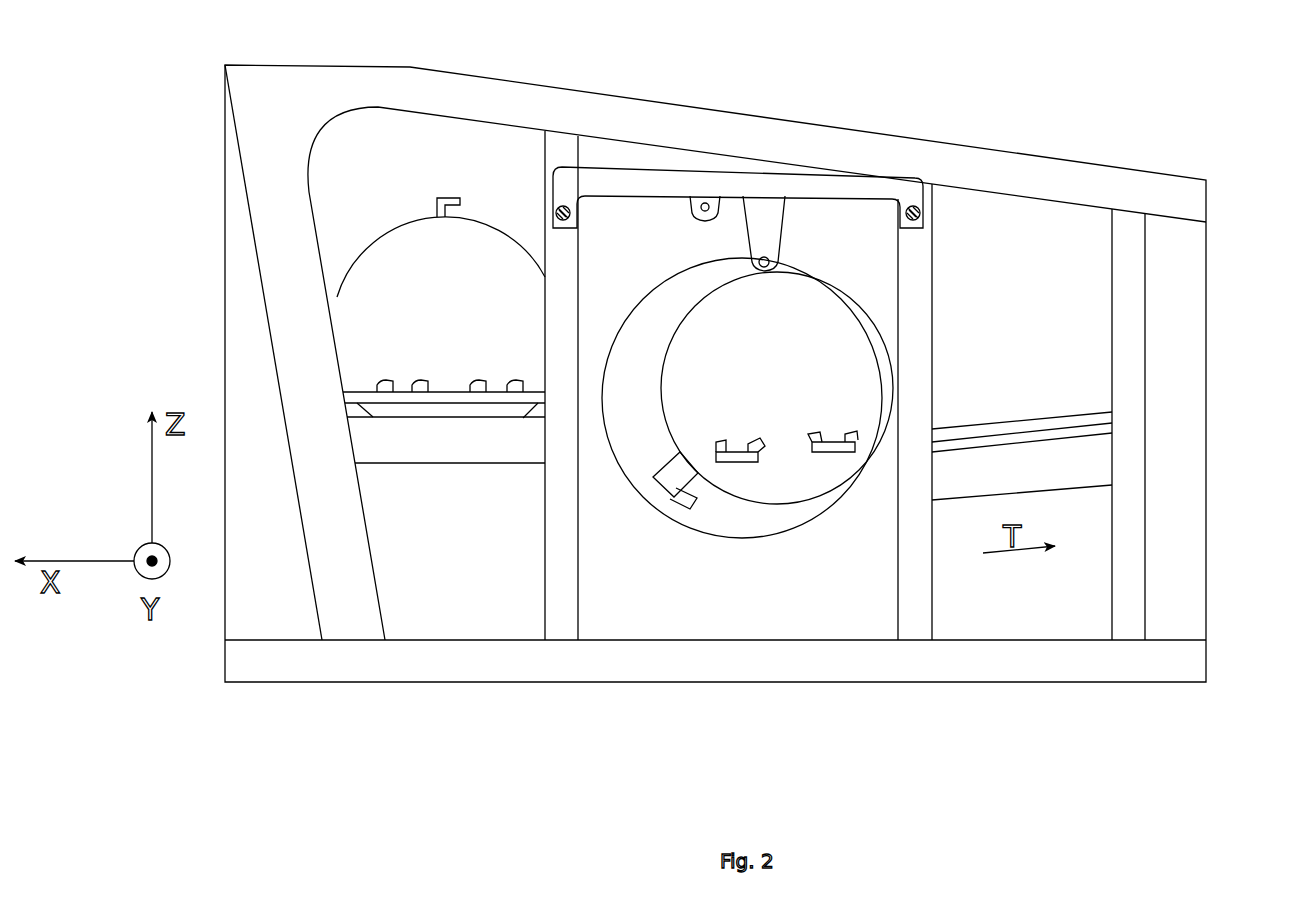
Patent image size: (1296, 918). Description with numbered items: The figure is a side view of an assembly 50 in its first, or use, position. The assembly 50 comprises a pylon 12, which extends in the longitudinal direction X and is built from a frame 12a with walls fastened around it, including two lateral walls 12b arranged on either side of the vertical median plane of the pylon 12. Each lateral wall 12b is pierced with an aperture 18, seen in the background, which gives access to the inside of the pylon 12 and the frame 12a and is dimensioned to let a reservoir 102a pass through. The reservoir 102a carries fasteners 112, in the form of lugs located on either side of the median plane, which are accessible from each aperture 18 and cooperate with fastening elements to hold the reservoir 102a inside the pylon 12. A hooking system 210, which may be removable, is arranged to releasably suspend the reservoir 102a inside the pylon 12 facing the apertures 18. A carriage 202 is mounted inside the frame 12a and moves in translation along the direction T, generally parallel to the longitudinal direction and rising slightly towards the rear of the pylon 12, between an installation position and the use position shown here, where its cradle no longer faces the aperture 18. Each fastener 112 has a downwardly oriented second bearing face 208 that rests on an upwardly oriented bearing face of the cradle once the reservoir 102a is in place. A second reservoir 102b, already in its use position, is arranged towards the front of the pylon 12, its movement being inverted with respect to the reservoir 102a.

The assembly 50 is at (1077, 86).
The pylon 12 is at (1160, 163).
The frame 12a is at (1127, 597).
The lateral wall 12b is at (1048, 296).
The aperture 18 is at (650, 507).
The reservoir 102a is at (832, 376).
The second reservoir 102b is at (501, 310).
The fasteners 112 is at (833, 452).
The carriage 202 is at (427, 425).
The second bearing face 208 is at (730, 462).
The hooking system 210 is at (768, 217).